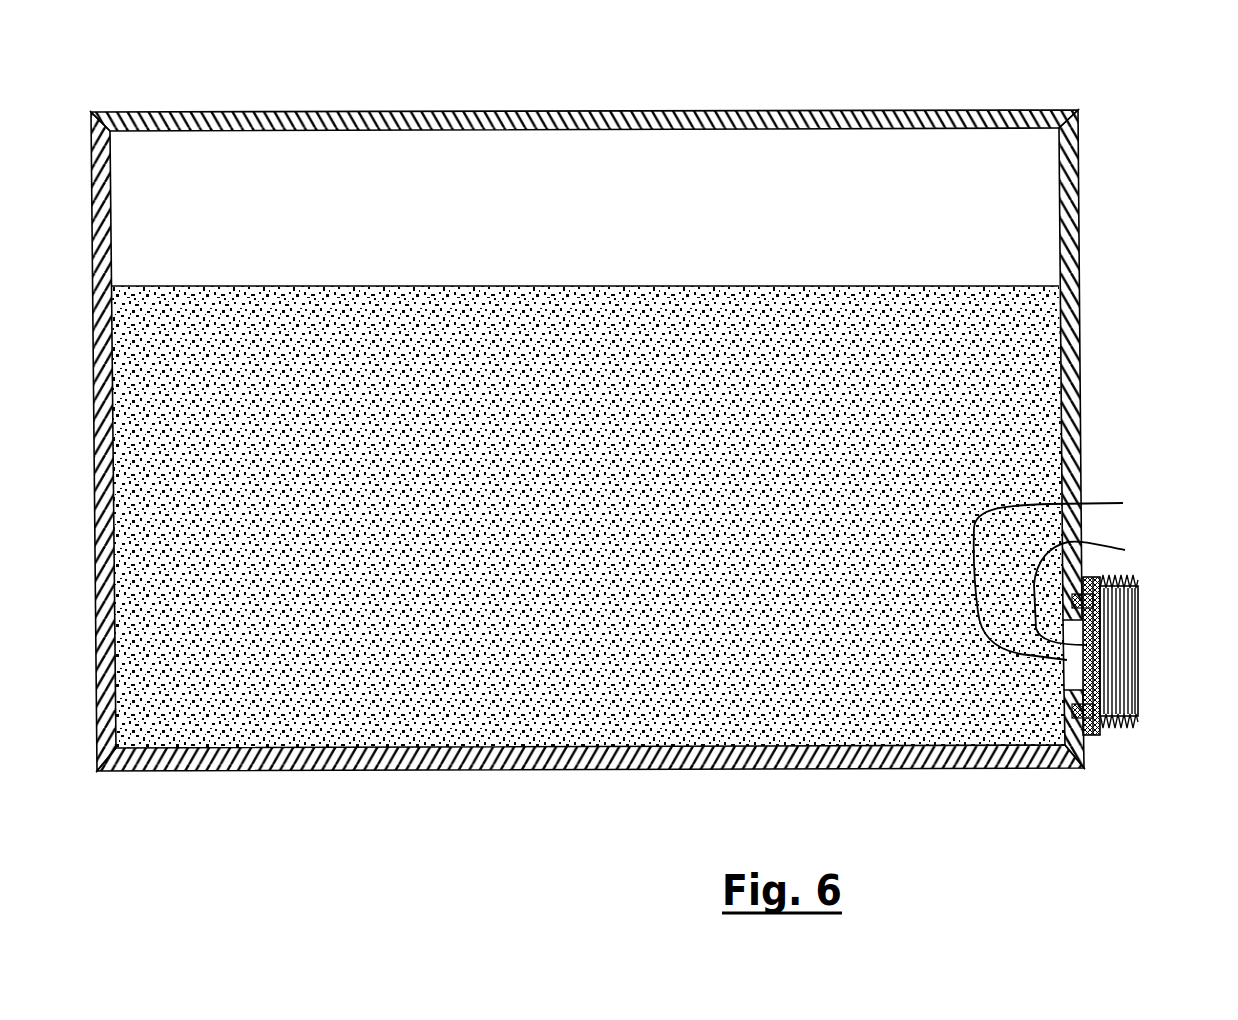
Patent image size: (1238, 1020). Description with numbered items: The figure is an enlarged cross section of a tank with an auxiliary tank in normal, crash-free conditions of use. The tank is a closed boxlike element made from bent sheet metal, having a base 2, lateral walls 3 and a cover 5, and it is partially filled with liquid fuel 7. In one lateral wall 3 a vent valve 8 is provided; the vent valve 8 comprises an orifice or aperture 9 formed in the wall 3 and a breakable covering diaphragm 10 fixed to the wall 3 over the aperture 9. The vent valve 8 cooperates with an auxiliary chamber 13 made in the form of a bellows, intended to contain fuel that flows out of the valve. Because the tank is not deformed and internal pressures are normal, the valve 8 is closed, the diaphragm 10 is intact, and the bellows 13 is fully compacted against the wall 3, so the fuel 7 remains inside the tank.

The base 2 is at (545, 770).
The lateral wall 3 is at (1085, 432).
The cover 5 is at (545, 110).
The liquid fuel 7 is at (712, 560).
The vent valve 8 is at (1152, 662).
The orifice or aperture 9 is at (1064, 575).
The breakable covering diaphragm 10 is at (1097, 592).
The auxiliary chamber 13 is at (1138, 588).